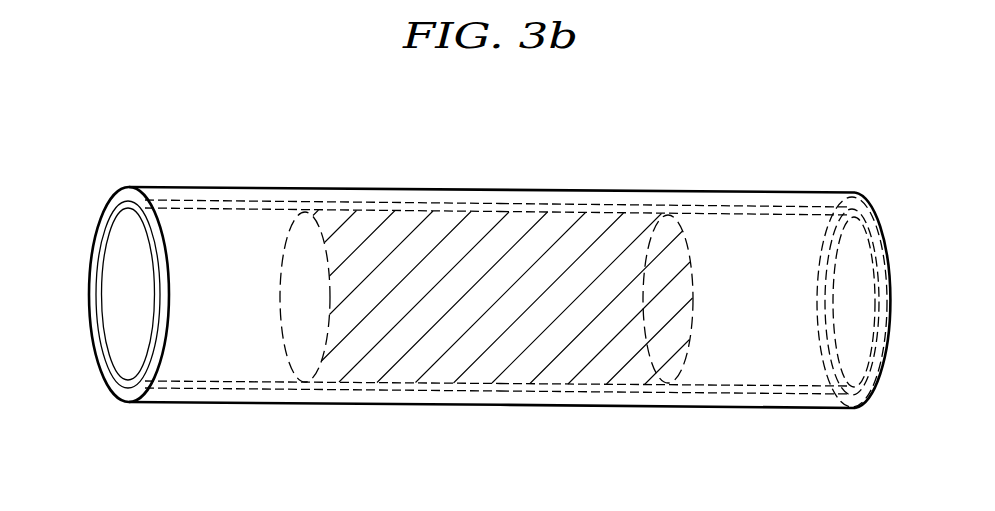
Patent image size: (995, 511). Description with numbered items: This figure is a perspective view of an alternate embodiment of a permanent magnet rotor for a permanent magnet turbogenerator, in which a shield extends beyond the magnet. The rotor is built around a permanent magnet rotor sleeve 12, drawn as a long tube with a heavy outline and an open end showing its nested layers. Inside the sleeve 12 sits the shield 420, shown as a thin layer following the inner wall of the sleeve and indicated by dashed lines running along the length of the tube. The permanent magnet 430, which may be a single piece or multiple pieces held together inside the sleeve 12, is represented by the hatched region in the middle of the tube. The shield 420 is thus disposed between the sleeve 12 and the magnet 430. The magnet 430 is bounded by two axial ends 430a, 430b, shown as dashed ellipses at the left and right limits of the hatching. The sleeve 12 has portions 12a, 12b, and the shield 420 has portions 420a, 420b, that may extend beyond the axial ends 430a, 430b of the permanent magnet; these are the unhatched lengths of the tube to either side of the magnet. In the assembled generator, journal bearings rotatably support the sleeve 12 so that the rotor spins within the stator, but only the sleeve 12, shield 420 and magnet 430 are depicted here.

The permanent magnet rotor sleeve 12 is at (125, 193).
The sleeve portion 12a is at (210, 387).
The sleeve portion 12b is at (780, 390).
The shield 420 is at (112, 217).
The shield portion 420a is at (245, 195).
The shield portion 420b is at (785, 202).
The permanent magnet 430 is at (505, 310).
The axial end of permanent magnet 430a is at (306, 350).
The axial end of permanent magnet 430b is at (667, 353).